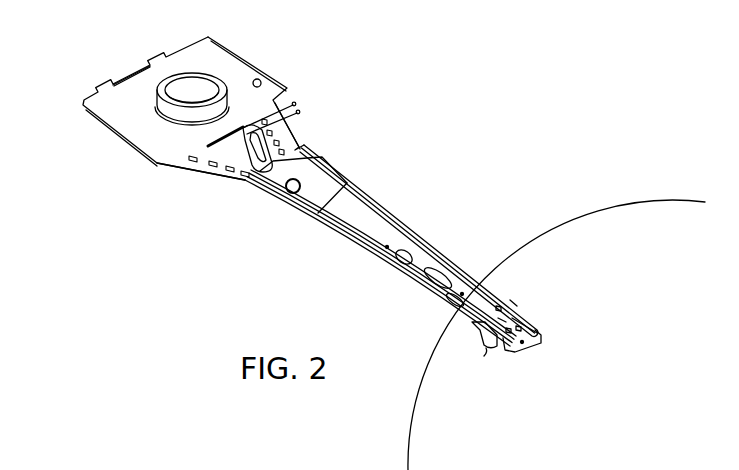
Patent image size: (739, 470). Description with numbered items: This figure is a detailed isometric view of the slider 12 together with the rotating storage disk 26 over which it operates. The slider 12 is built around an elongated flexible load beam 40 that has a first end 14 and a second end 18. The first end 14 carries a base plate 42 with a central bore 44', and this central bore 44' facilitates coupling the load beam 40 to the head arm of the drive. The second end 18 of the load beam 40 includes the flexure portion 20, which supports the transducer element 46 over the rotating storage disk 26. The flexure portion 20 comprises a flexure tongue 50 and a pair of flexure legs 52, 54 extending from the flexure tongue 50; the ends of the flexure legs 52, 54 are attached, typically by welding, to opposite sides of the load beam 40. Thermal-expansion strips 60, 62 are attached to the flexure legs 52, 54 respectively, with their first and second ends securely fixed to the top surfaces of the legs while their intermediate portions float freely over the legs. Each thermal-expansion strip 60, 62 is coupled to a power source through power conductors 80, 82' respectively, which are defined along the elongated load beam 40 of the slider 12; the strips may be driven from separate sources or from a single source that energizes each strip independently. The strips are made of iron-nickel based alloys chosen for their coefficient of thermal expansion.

The slider 12 is at (206, 227).
The first end 14 is at (127, 63).
The second end 18 is at (500, 317).
The flexure portion 20 is at (515, 294).
The rotating storage disk 26 is at (545, 257).
The load beam 40 is at (381, 210).
The base plate 42 is at (236, 46).
The central bore 44' is at (171, 99).
The transducer element 46 is at (505, 350).
The flexure tongue 50 is at (533, 338).
The flexure leg 52 is at (478, 338).
The flexure leg 54 is at (520, 322).
The thermal-expansion strip 60 is at (482, 358).
The thermal-expansion strip 62 is at (523, 324).
The power conductor 80 is at (337, 184).
The power conductor 82' is at (305, 148).